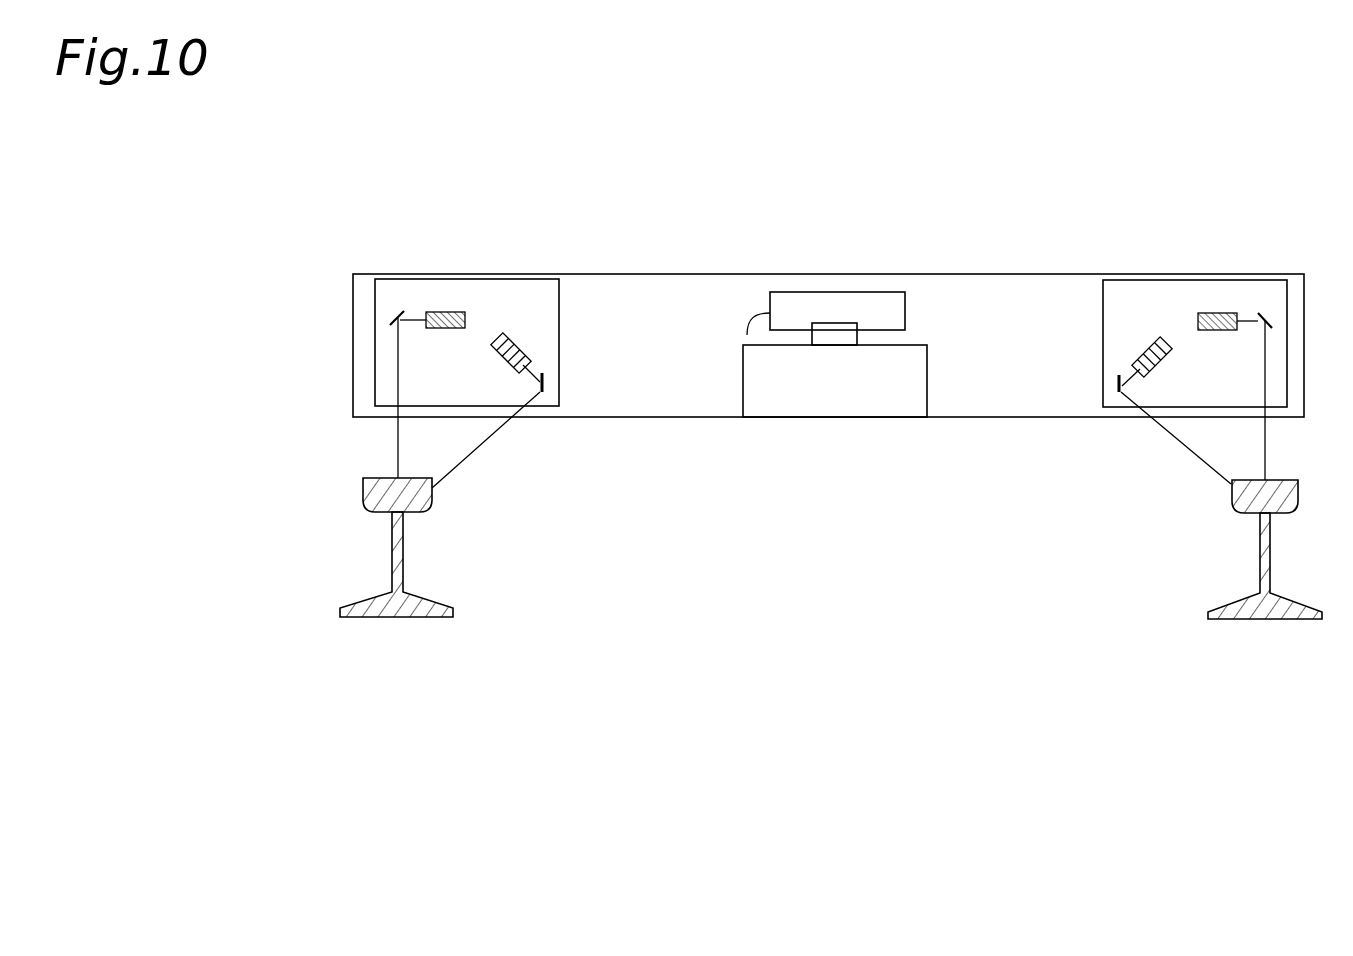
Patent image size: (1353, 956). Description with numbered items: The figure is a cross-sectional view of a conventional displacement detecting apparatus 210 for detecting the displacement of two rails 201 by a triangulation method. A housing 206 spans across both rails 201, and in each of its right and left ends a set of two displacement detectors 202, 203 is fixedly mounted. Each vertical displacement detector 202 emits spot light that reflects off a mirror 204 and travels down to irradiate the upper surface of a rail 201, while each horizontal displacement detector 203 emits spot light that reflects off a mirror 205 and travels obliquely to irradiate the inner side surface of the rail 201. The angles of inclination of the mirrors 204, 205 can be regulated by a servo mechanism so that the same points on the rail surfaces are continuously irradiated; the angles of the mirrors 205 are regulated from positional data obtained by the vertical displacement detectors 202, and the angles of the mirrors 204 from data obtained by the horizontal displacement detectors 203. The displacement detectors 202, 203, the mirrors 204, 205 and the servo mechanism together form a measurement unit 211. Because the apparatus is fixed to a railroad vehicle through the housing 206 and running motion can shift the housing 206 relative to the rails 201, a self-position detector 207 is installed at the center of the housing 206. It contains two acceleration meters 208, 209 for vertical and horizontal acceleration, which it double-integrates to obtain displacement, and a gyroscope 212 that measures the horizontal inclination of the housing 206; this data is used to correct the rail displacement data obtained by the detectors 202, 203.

The rail 201 is at (403, 555).
The vertical displacement detector 202 is at (447, 312).
The horizontal displacement detector 203 is at (520, 338).
The mirror 204 is at (393, 314).
The mirror 205 is at (545, 382).
The housing 206 is at (1043, 274).
The self-position detector 207 is at (727, 480).
The acceleration meter 208 is at (848, 338).
The acceleration meter 209 is at (825, 336).
The displacement detecting apparatus 210 is at (904, 222).
The measurement unit 211 is at (620, 181).
The gyroscope 212 is at (747, 335).